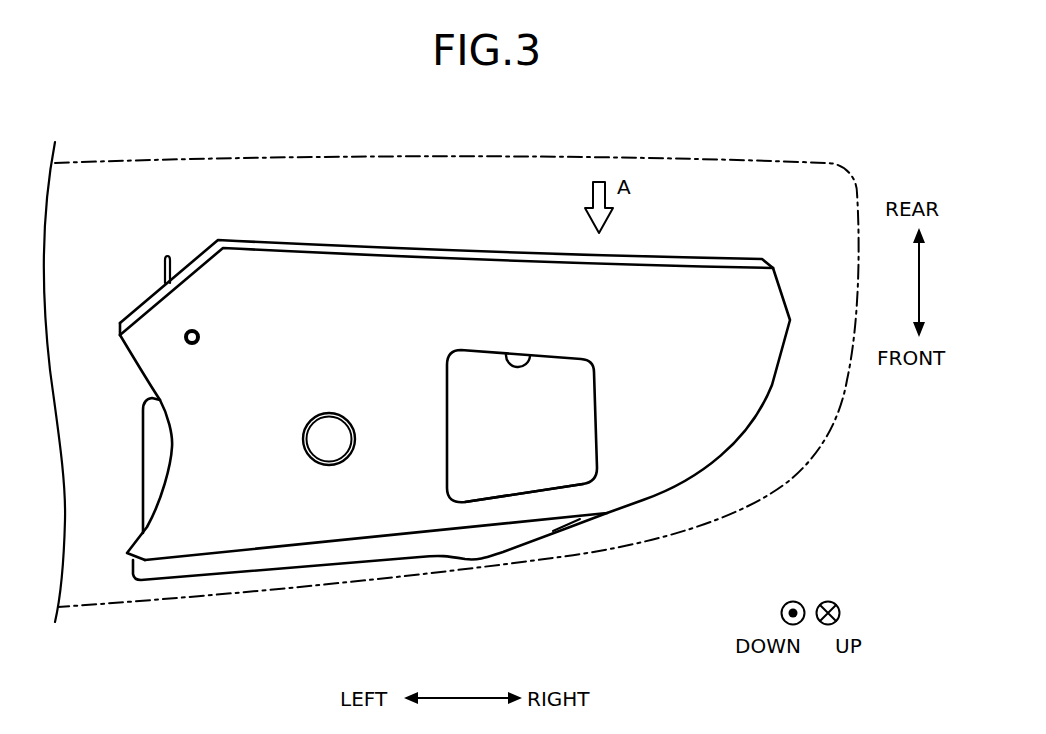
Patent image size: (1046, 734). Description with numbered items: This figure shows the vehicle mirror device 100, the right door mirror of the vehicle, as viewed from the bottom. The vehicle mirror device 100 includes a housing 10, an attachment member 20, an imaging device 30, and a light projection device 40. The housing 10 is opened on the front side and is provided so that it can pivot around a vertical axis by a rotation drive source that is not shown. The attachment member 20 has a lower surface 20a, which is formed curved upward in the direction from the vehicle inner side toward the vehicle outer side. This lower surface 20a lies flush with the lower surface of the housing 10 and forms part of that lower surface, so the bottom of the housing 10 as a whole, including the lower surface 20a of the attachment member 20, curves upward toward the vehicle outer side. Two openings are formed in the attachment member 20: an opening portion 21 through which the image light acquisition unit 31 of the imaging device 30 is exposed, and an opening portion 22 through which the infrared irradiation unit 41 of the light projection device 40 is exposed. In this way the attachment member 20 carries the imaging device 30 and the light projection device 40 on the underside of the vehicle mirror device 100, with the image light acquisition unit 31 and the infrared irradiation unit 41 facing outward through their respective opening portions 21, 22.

The vehicle mirror device 100 is at (734, 153).
The housing 10 is at (85, 596).
The attachment member 20 is at (455, 410).
The lower surface of the attachment member 20a is at (693, 285).
The opening portion 21 is at (316, 426).
The opening portion 22 is at (530, 356).
The imaging device 30 is at (306, 446).
The image light acquisition unit 31 is at (330, 450).
The light projection device 40 is at (498, 410).
The infrared irradiation unit 41 is at (487, 480).